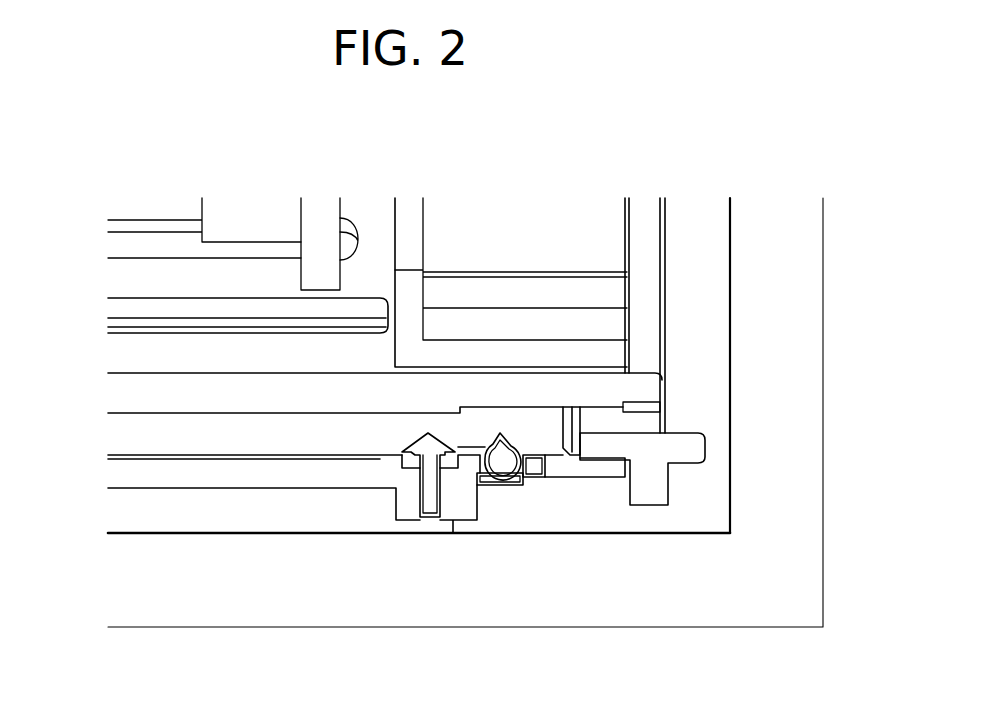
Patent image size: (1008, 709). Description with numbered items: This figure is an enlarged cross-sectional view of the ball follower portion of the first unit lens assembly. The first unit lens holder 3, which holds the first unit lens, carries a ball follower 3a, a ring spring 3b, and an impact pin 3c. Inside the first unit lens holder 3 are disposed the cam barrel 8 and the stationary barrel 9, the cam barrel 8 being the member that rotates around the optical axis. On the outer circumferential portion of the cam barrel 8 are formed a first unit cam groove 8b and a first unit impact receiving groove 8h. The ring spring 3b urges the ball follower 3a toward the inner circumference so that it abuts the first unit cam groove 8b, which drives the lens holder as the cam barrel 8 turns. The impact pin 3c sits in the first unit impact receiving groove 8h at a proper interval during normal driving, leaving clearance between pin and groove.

The first unit lens holder 3 is at (148, 473).
The ball follower 3a is at (508, 463).
The ring spring 3b is at (503, 485).
The impact pin 3c is at (432, 492).
The cam barrel 8 is at (240, 440).
The first unit cam groove 8b is at (505, 437).
The first unit impact receiving groove 8h is at (397, 441).
The stationary barrel 9 is at (131, 395).